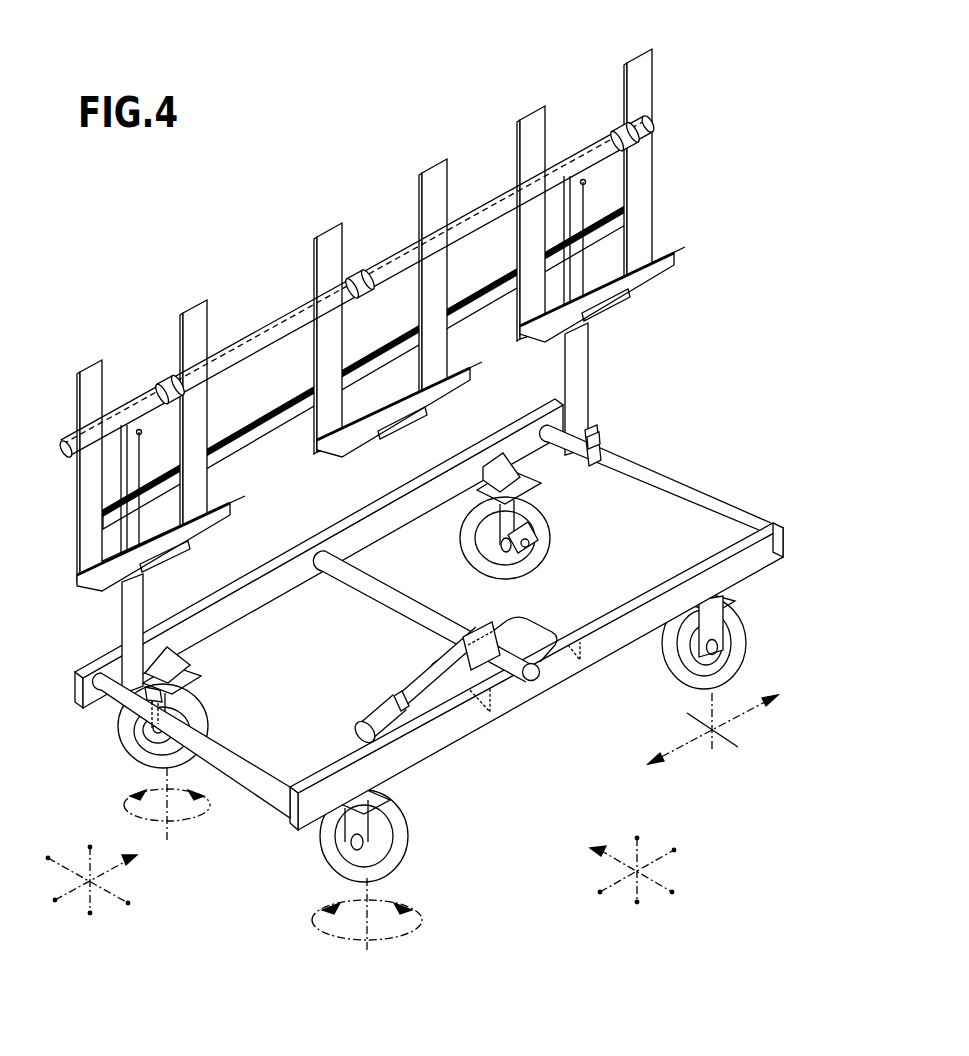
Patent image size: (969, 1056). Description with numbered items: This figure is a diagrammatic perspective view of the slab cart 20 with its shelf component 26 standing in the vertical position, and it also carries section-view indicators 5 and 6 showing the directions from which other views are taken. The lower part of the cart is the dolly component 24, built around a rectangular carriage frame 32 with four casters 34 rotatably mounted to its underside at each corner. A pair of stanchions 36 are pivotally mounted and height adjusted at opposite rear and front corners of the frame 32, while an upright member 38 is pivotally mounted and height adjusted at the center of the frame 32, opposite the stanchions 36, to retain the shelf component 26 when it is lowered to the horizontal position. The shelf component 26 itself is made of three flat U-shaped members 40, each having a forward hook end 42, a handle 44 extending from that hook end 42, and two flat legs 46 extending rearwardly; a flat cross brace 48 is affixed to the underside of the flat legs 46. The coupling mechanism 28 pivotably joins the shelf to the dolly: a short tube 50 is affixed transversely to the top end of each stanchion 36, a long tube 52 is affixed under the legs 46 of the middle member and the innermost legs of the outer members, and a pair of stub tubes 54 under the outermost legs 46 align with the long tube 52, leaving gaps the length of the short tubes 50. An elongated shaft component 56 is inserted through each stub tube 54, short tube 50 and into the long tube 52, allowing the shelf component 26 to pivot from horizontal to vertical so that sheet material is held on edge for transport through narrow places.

The slab cart 20 is at (699, 462).
The dolly component 24 is at (78, 688).
The shelf component 26 is at (75, 505).
The coupling mechanism 28 is at (62, 449).
The rectangular carriage frame 32 is at (296, 820).
The caster 34 is at (553, 545).
The stanchion 36 is at (592, 380).
The upright member 38 is at (410, 702).
The flat U-shaped member 40 is at (656, 212).
The forward hook end 42 is at (676, 258).
The handle 44 is at (608, 306).
The flat leg 46 is at (633, 92).
The flat cross brace 48 is at (277, 410).
The short tube 50 is at (170, 400).
The long tube 52 is at (275, 336).
The stub tube 54 is at (655, 133).
The elongated shaft component 56 is at (658, 126).
The view direction indicator FIG. 5 is at (91, 887).
The view direction indicator FIG. 6 is at (640, 870).